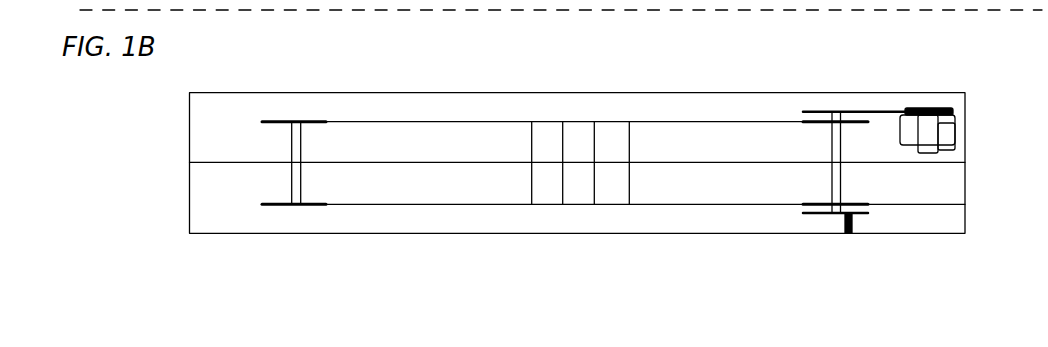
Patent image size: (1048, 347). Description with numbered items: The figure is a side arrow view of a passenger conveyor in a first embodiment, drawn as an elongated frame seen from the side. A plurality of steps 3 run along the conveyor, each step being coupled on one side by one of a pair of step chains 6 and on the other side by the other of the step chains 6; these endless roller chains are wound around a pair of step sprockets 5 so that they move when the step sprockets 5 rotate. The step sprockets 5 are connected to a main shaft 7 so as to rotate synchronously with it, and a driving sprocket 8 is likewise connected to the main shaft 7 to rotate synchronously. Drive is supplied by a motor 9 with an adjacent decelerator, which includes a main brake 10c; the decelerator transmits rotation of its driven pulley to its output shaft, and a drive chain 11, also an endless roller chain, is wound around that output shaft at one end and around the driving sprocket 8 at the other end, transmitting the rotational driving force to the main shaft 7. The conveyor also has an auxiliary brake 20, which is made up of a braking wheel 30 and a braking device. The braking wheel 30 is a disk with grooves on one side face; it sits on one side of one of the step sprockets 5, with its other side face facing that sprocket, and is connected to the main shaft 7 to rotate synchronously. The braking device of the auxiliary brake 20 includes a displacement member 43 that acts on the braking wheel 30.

The auxiliary brake 20 is at (771, 290).
The step chains 6 is at (712, 121).
The steps 3 is at (577, 190).
The step sprockets 5 is at (835, 138).
The main shaft 7 is at (818, 112).
The driving sprocket 8 is at (845, 112).
The drive chain 11 is at (887, 110).
The motor 9 is at (940, 127).
The main brake 10c is at (945, 152).
The braking wheel 30 is at (803, 214).
The displacement member 43 is at (849, 233).